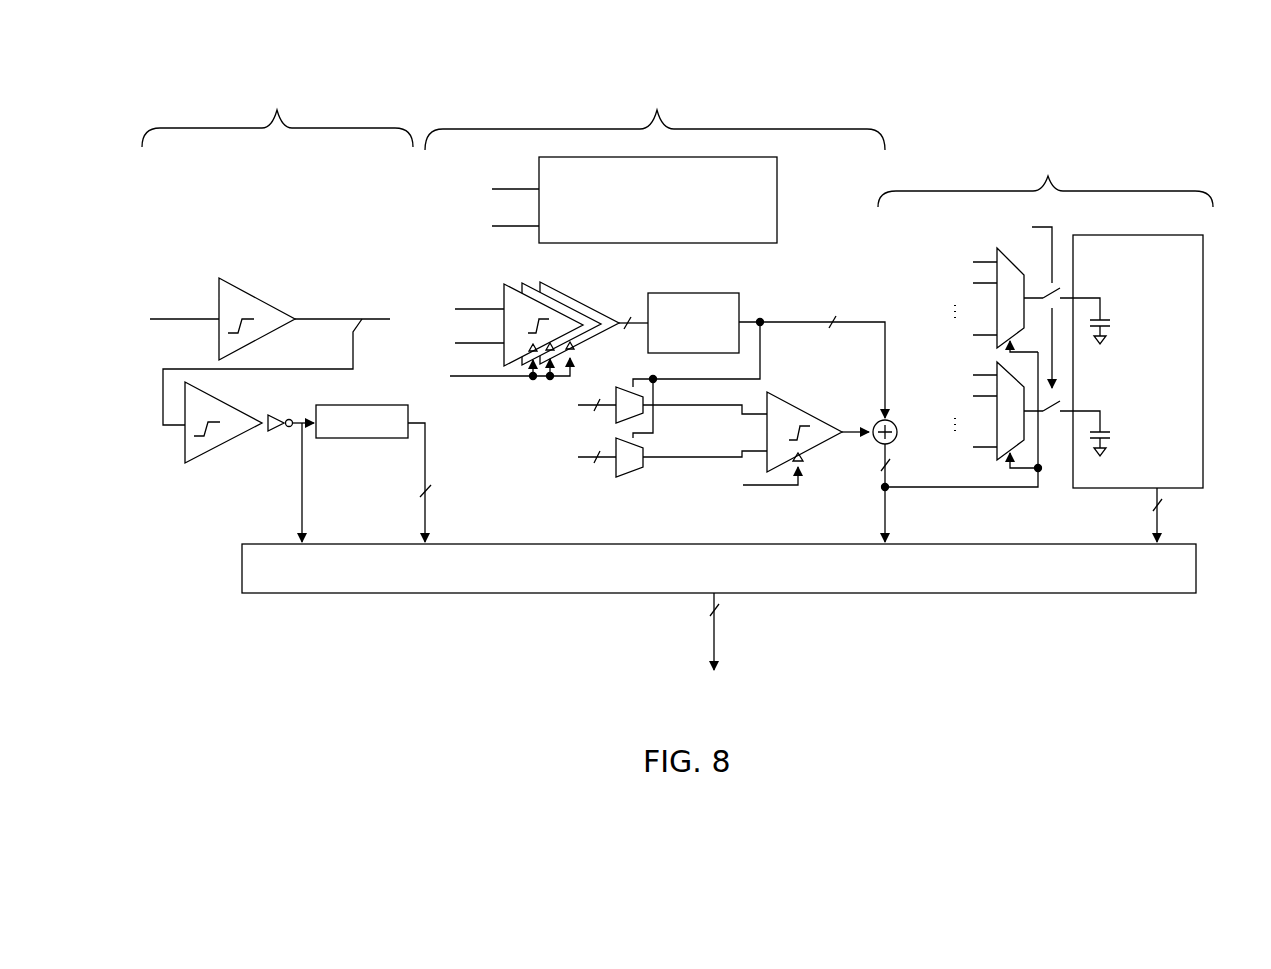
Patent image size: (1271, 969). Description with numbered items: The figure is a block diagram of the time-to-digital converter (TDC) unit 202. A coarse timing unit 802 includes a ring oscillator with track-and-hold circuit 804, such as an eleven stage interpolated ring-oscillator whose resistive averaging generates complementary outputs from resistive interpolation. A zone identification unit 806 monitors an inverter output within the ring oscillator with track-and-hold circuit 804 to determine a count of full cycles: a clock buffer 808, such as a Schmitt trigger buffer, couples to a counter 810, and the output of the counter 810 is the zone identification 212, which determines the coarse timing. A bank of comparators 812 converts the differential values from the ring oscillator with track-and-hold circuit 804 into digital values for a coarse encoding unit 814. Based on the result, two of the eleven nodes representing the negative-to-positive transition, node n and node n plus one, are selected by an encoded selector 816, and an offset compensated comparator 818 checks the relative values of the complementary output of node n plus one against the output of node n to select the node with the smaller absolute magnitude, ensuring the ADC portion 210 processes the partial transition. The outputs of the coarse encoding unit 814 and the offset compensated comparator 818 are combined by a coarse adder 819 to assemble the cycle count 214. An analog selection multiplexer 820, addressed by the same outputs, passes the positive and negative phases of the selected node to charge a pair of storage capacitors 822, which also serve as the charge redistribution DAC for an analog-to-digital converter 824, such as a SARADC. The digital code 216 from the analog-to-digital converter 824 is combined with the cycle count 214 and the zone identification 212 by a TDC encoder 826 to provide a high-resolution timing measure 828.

The time-to-digital converter (TDC) unit 202 is at (224, 66).
The zone identification unit 806 is at (277, 112).
The coarse timing unit 802 is at (657, 112).
The ADC portion 210 is at (1048, 178).
The ring oscillator with track-and-hold circuit 804 is at (643, 239).
The clock buffer 808 is at (237, 425).
The counter 810 is at (395, 440).
The bank of comparators 812 is at (550, 279).
The coarse encoding unit 814 is at (737, 313).
The encoded selector 816 is at (622, 457).
The offset compensated comparator 818 is at (807, 432).
The coarse adder 819 is at (880, 404).
The analog selection multiplexer 820 is at (1010, 297).
The storage capacitors 822 is at (1112, 438).
The analog-to-digital converter 824 is at (1140, 389).
The TDC encoder 826 is at (1084, 589).
The high-resolution timing measure 828 is at (713, 640).
The zone identification 212 is at (427, 517).
The cycle count 214 is at (893, 517).
The digital code 216 is at (1172, 520).